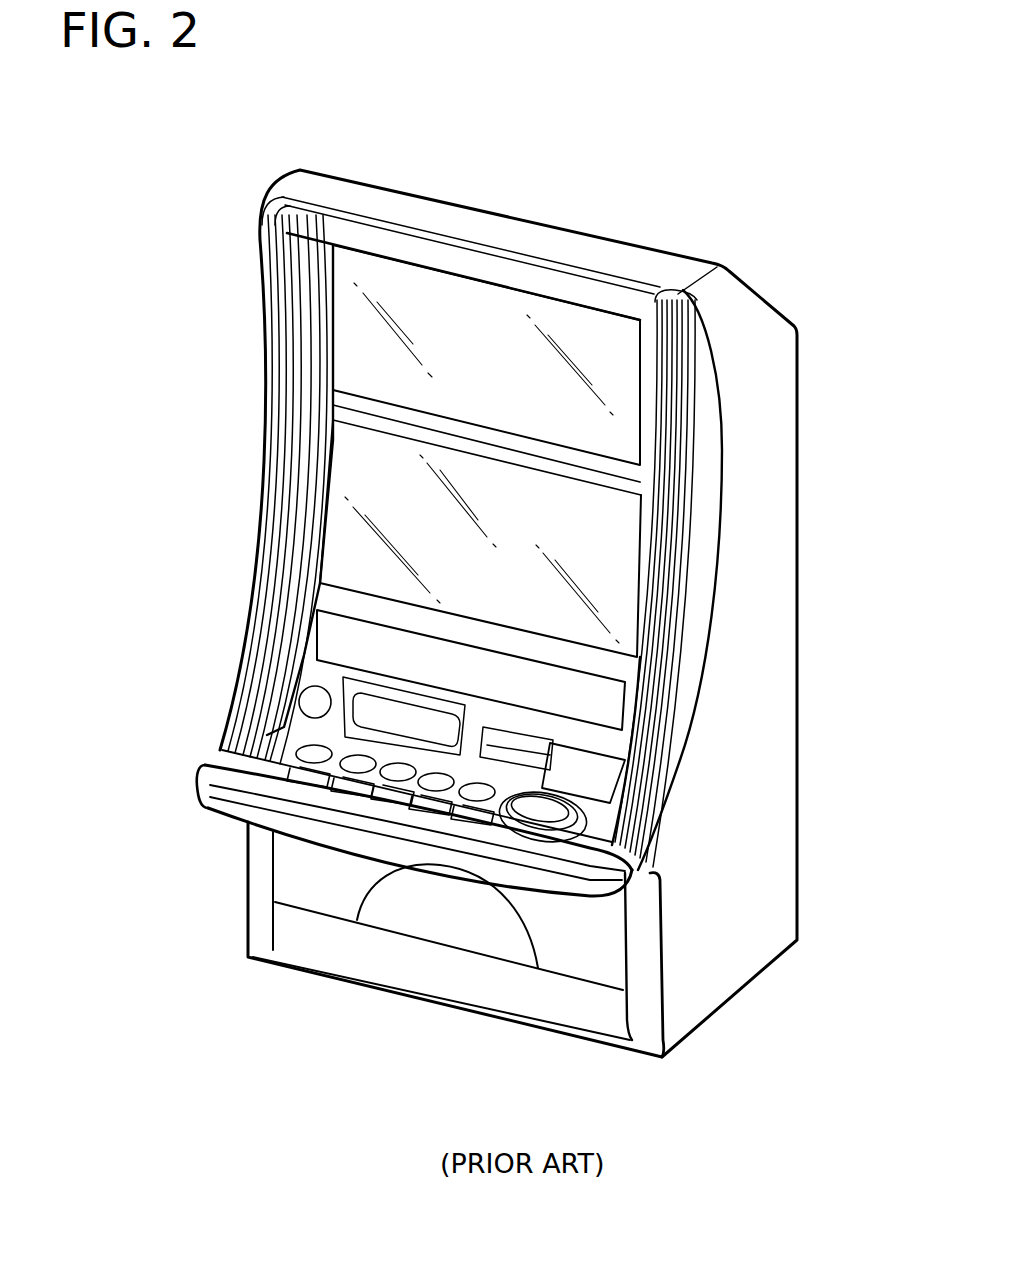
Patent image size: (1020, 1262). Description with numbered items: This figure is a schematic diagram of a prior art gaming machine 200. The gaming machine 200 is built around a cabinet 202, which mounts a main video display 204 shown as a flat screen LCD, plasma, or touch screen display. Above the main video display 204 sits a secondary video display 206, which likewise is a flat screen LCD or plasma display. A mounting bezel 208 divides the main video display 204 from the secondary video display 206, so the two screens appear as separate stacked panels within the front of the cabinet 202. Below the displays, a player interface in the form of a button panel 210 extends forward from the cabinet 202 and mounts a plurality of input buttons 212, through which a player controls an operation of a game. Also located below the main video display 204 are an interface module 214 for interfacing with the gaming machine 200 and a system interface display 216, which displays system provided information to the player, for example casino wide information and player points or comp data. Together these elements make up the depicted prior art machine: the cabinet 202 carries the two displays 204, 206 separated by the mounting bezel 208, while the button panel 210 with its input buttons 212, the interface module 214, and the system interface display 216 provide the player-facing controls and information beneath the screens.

The gaming machine 200 is at (755, 164).
The cabinet 202 is at (772, 580).
The main video display 204 is at (373, 512).
The secondary video display 206 is at (378, 304).
The mounting bezel 208 is at (375, 413).
The button panel 210 is at (222, 758).
The input buttons 212 is at (350, 783).
The interface module 214 is at (583, 767).
The system interface display 216 is at (410, 717).